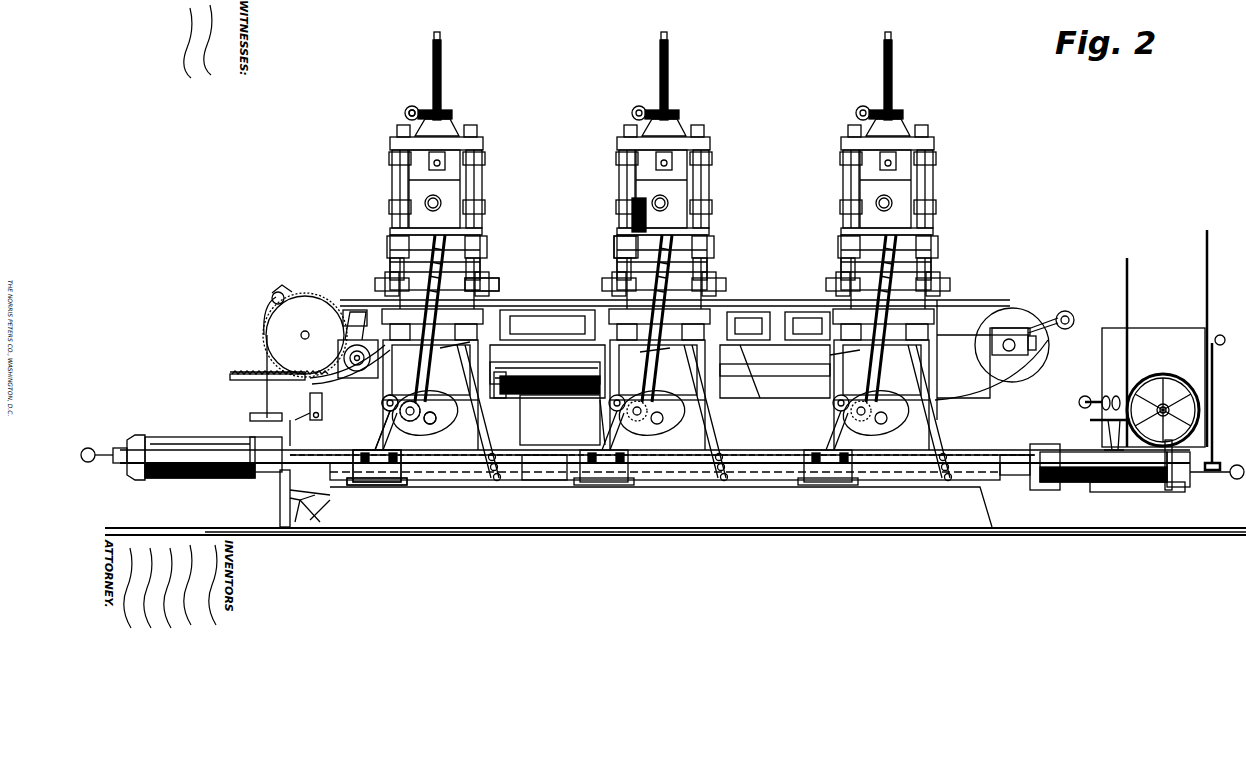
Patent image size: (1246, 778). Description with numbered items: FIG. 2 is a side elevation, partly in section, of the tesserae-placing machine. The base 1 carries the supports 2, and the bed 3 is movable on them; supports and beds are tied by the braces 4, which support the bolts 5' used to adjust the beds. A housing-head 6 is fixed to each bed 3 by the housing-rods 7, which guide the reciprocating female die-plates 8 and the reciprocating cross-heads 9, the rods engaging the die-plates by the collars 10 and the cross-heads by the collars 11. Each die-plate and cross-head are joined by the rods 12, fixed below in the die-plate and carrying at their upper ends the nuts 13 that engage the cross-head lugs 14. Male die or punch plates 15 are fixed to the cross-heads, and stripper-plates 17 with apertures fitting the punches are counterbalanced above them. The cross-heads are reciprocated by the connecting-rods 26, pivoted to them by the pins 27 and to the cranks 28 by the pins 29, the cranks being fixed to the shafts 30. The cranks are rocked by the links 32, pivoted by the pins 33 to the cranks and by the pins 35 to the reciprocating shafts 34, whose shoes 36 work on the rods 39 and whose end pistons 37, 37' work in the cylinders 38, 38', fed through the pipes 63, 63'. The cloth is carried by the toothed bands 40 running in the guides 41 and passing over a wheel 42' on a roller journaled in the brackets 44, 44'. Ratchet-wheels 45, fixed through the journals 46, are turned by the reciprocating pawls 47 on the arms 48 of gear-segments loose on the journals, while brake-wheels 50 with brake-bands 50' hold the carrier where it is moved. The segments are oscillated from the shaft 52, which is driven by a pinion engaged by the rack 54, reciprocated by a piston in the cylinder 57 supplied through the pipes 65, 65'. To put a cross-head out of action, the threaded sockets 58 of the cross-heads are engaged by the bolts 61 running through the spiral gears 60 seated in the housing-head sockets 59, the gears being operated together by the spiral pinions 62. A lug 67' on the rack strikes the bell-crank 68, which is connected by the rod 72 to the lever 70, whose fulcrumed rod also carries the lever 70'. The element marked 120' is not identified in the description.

The base 1 is at (750, 538).
The supports 2 is at (957, 412).
The bed 3 is at (490, 305).
The braces 4 is at (660, 364).
The bolts 5' is at (547, 325).
The housing-head 6 is at (484, 143).
The housing-rods 7 is at (388, 244).
The female die-plates 8 is at (488, 286).
The cross-heads 9 is at (445, 203).
The collars 10 is at (385, 283).
The collars 11 is at (396, 175).
The rods 12 is at (614, 242).
The nuts 13 is at (636, 210).
The cross-head lugs 14 is at (630, 226).
The male die or punch plates 15 is at (480, 262).
The stripper-plates 17 is at (422, 272).
The connecting-rods 26 is at (880, 362).
The pins 27 is at (410, 200).
The cranks 28 is at (882, 486).
The pins 29 is at (418, 404).
The shafts 30 is at (672, 430).
The links 32 is at (380, 425).
The pins 33 is at (383, 404).
The reciprocating shafts 34 is at (705, 482).
The pins 35 is at (842, 487).
The shoes 36 is at (810, 490).
The piston 37 is at (276, 498).
The piston 37' is at (1017, 490).
The cylinder 38 is at (204, 471).
The cylinder 38' is at (1110, 482).
The rods 39 is at (1145, 492).
The toothed bands 40 is at (1012, 345).
The guides 41 is at (1051, 322).
The wheel 42' is at (1030, 358).
The brackets 44 is at (350, 329).
The brackets 44' is at (991, 375).
The ratchet-wheels 45 is at (262, 318).
The journals 46 is at (300, 340).
The reciprocating pawls 47 is at (274, 293).
The arms 48 is at (292, 277).
The brake-wheels 50 is at (241, 370).
The brake-bands 50' is at (285, 401).
The shaft 52 is at (343, 357).
The rack 54 is at (248, 382).
The cylinder 57 is at (547, 391).
The threaded sockets 58 is at (445, 162).
The threaded sockets 59 is at (448, 130).
The spiral gears 60 is at (452, 112).
The bolts 61 is at (443, 52).
The spiral pinions 62 is at (406, 110).
The pipe 63 is at (248, 305).
The pipe 63' is at (1217, 486).
The pipe 65 is at (560, 437).
The pipe 65' is at (584, 422).
The lug 67' is at (251, 384).
The bell-crank 68 is at (306, 419).
The lever 70 is at (309, 526).
The lever 70' is at (320, 505).
The rod 72 is at (292, 522).
The link 120' is at (737, 376).